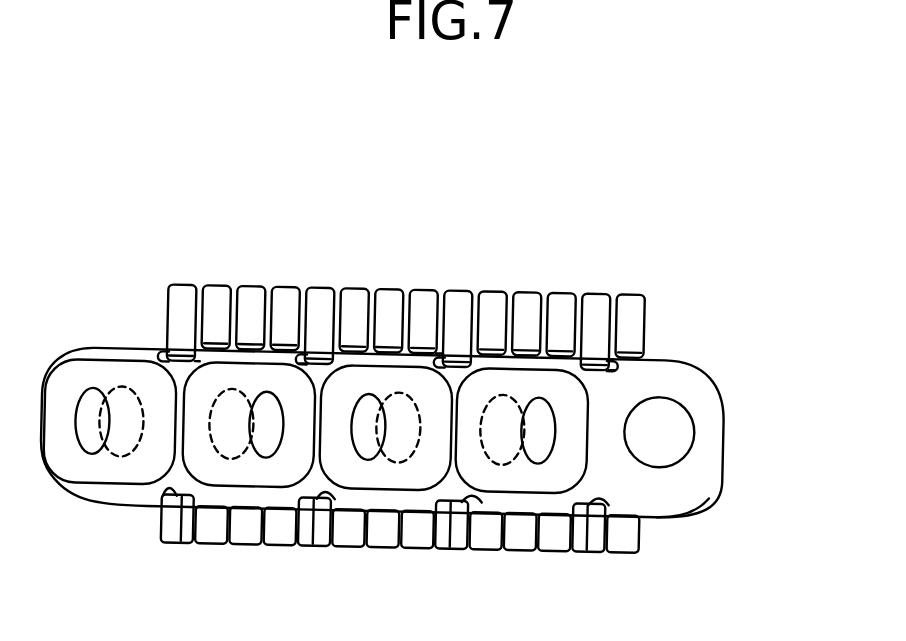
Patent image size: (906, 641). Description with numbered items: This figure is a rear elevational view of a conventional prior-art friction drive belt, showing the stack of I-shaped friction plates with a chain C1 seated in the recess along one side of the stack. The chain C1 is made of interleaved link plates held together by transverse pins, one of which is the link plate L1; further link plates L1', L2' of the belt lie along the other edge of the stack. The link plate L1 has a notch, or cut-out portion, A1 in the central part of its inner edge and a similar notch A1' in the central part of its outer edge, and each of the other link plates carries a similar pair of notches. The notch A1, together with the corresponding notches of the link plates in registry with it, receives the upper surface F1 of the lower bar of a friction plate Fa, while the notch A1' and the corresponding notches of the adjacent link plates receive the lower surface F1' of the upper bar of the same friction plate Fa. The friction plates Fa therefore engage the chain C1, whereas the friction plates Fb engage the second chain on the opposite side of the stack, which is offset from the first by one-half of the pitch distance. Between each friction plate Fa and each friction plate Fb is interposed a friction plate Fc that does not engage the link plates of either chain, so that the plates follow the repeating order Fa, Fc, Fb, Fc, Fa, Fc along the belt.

The friction plate Fa is at (182, 292).
The friction plate Fb is at (250, 292).
The friction plate Fc is at (423, 296).
The notch A1 is at (371, 355).
The upper surface of the lower bar F1 is at (432, 377).
The chain C1 is at (703, 386).
The link plate L1 is at (703, 526).
The notch A1' is at (385, 528).
The lower surface of the upper bar F1' is at (383, 542).
The lower link L1' is at (417, 550).
The second lower link L2' is at (365, 546).